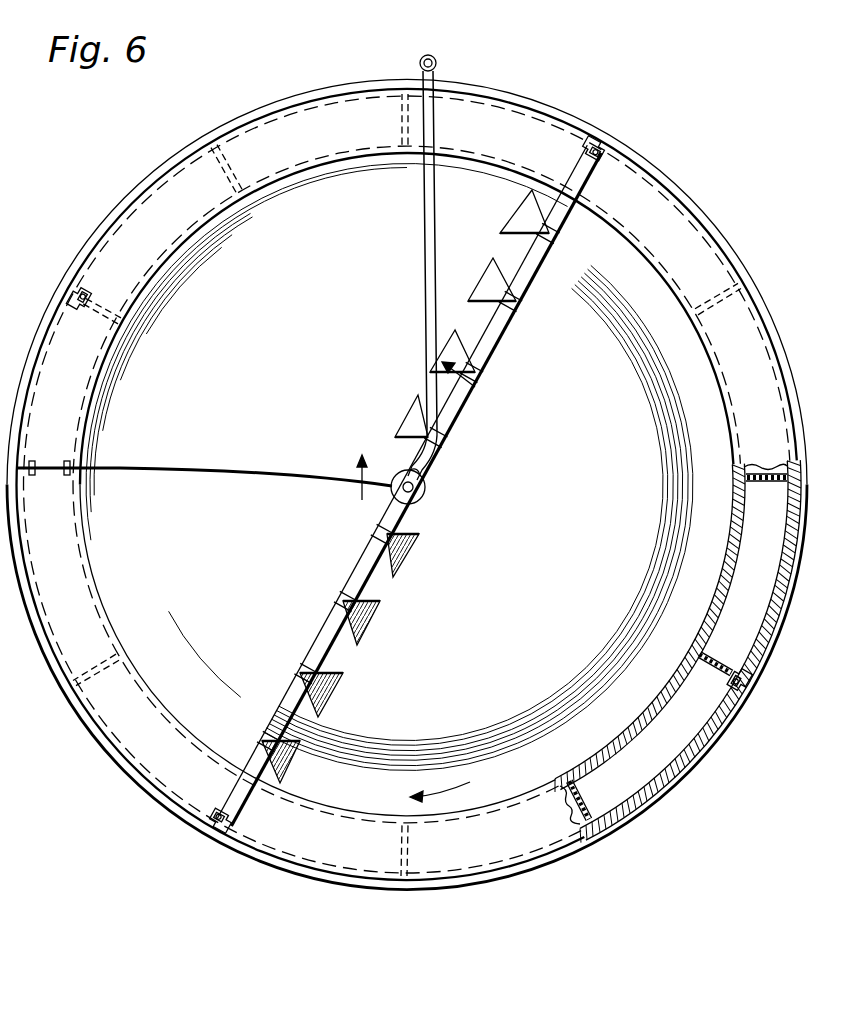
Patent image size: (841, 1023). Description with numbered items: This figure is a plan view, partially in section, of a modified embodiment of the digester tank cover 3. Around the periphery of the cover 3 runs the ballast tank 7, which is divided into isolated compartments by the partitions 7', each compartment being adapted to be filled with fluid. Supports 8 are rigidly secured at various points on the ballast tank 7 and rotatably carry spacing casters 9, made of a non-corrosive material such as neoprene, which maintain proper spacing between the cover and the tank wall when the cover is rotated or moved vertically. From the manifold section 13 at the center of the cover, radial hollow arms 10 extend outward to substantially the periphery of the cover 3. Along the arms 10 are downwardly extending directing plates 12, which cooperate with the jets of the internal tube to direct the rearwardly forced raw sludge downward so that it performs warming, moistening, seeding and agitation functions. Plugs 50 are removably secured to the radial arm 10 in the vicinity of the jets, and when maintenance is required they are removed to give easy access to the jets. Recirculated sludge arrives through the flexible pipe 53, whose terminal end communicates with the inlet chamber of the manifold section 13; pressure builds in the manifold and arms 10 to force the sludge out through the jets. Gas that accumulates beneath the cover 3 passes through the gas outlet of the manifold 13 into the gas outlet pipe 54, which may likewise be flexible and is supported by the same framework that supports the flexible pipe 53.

The tank cover 3 is at (608, 451).
The ballast tank 7 is at (407, 458).
The partition 7' is at (673, 644).
The support 8 is at (416, 438).
The spacing caster 9 is at (746, 685).
The radial hollow arm 10 is at (312, 641).
The directing plate 12 is at (503, 241).
The manifold section 13 is at (425, 492).
The plug 50 is at (258, 740).
The flexible pipe 53 is at (424, 214).
The gas outlet pipe 54 is at (428, 470).